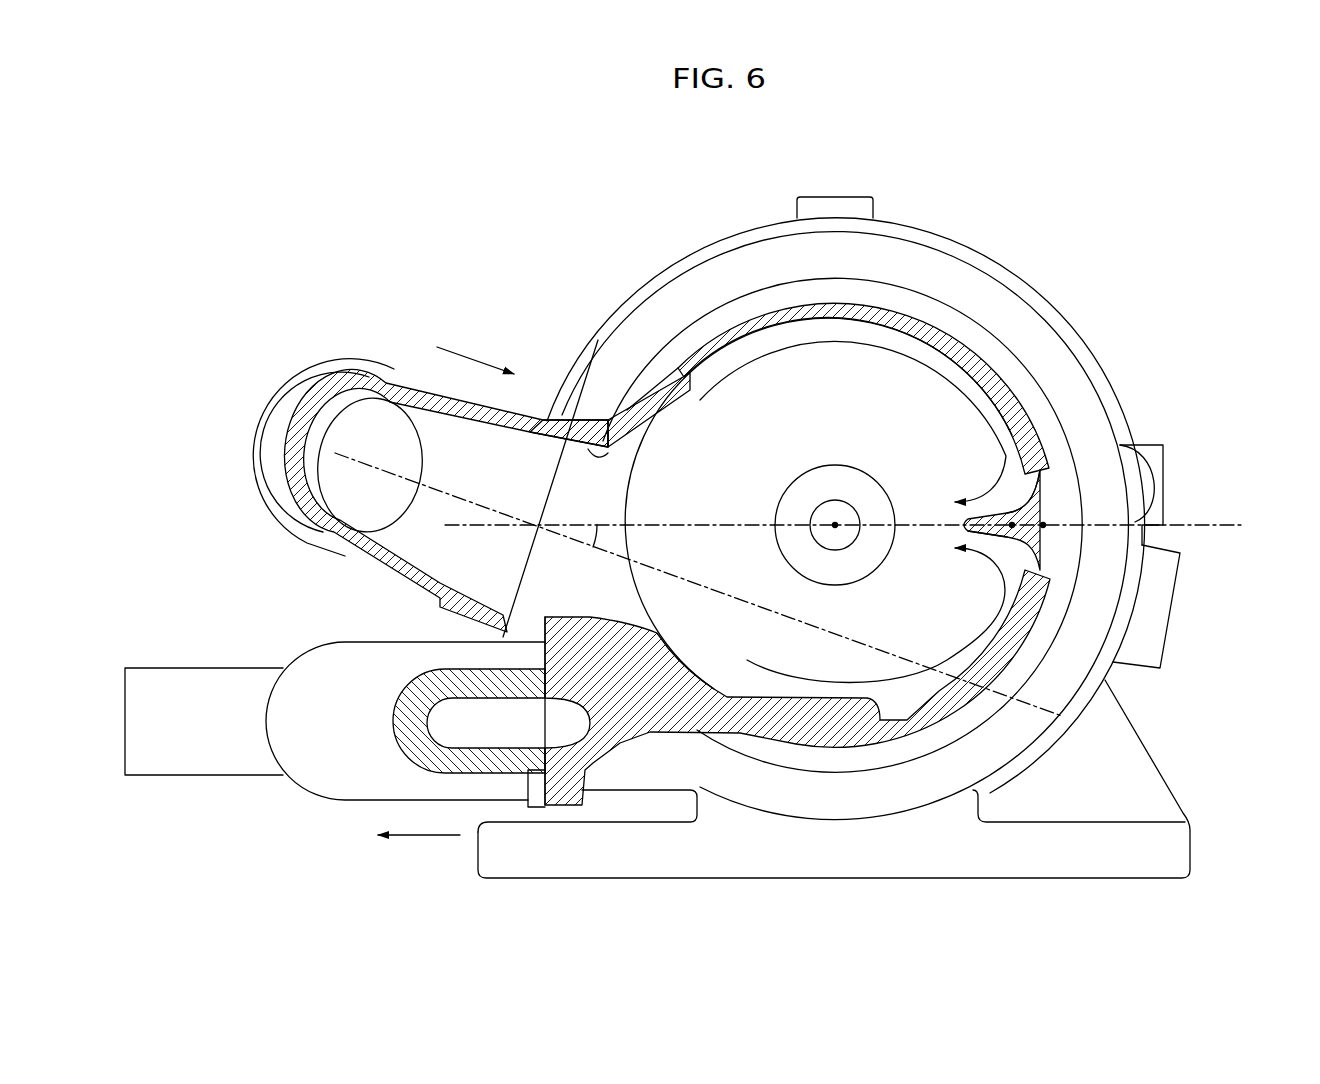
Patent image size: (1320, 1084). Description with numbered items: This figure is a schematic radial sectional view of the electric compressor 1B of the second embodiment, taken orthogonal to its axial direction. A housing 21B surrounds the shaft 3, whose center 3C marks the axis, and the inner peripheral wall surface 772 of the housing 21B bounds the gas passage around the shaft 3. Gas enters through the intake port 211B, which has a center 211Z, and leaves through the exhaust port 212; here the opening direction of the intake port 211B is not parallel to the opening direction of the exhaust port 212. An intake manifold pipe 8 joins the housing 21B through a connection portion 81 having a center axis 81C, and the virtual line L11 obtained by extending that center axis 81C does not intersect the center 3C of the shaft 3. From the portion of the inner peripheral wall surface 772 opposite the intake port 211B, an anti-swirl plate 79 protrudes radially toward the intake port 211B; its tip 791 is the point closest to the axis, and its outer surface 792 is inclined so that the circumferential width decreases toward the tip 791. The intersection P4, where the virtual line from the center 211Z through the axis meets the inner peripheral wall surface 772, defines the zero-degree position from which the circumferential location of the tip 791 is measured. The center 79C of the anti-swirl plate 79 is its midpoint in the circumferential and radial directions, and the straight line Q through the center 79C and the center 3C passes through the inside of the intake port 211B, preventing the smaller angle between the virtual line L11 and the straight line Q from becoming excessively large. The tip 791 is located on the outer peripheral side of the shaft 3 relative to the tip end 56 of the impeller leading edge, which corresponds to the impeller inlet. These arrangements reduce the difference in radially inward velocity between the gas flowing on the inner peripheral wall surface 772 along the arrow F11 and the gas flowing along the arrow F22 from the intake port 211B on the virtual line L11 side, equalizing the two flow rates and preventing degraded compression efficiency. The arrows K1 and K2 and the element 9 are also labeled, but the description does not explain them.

The electric compressor 1B is at (748, 178).
The shaft 3 is at (1000, 315).
The center of the shaft 3C is at (838, 523).
The housing 21B is at (908, 300).
The intake port 211B is at (603, 447).
The center of the intake port 211Z is at (545, 422).
The tip end of the leading edge of the impeller 56 is at (822, 587).
The inner peripheral wall surface 772 is at (840, 500).
The anti-swirl plate 79 is at (1013, 508).
The center of the anti-swirl plate 79C is at (1135, 515).
The tip of the anti-swirl plate 791 is at (973, 535).
The outer surface of the anti-swirl plate 792 is at (1010, 538).
The intersection P4 is at (1045, 527).
The straight line Q is at (692, 523).
The virtual line L11 is at (897, 656).
The arrow F11 is at (797, 345).
The arrow F22 is at (780, 661).
The intake manifold pipe 8 is at (290, 365).
The connection portion 81 is at (427, 373).
The center axis of the connection portion 81C is at (357, 458).
The direction of movement K1 is at (444, 442).
The direction of movement K2 is at (418, 522).
The operating rod 9 is at (207, 782).
The exhaust port 212 is at (555, 722).